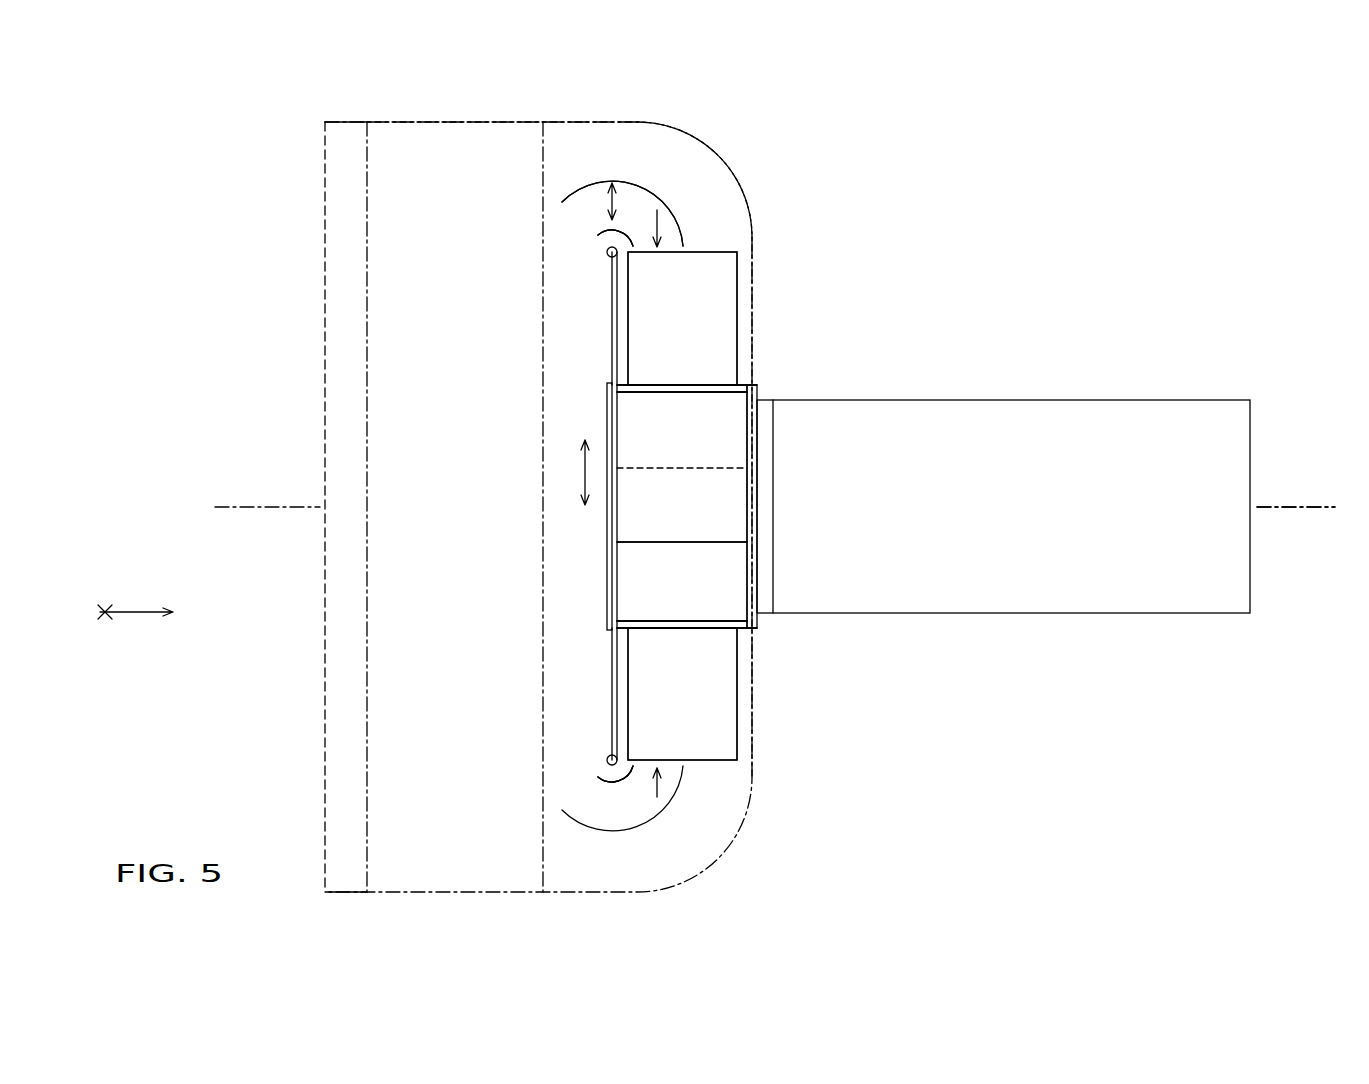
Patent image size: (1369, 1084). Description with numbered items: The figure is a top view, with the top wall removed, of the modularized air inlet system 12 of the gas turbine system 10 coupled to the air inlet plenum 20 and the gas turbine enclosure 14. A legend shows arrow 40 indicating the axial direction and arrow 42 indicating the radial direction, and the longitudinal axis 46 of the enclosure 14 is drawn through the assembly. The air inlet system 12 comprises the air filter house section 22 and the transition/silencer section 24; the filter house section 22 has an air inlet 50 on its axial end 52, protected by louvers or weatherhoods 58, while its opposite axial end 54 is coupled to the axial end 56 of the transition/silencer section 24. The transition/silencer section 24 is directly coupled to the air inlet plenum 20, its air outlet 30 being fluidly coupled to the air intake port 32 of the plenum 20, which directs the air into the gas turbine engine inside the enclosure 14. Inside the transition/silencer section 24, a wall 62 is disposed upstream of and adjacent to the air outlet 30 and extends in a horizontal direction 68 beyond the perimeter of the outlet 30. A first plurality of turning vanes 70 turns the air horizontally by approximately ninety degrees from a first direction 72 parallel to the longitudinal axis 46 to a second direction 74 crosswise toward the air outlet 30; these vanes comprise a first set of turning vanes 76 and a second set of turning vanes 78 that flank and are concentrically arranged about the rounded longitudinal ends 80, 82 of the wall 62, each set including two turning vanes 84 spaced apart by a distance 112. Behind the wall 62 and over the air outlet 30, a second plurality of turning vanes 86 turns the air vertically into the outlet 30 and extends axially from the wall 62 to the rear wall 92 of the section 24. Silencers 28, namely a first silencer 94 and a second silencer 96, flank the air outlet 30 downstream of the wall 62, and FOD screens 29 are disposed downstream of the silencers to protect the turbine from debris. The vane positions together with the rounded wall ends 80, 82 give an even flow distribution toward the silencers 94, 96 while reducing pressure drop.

The gas turbine system 10 is at (873, 137).
The modularized air inlet system 12 is at (674, 110).
The gas turbine enclosure 14 is at (1092, 400).
The air inlet plenum 20 is at (773, 445).
The air filter house section 22 is at (455, 122).
The transition/silencer section 24 is at (583, 122).
The silencers 28 is at (737, 320).
The FOD screens 29 is at (749, 383).
The air outlet 30 is at (687, 487).
The air intake port 32 is at (743, 527).
The axial axis 40 is at (133, 615).
The radial axis 42 is at (95, 612).
The longitudinal axis 46 is at (1277, 507).
The air inlet 50 is at (338, 180).
The axial end 52 is at (367, 142).
The axial end 54 is at (542, 150).
The axial end 56 is at (545, 130).
The weatherhoods 58 is at (325, 225).
The wall 62 is at (615, 358).
The horizontal direction 68 is at (582, 473).
The first plurality of turning vanes 70 is at (692, 219).
The first direction 72 is at (577, 229).
The second direction 74 is at (684, 226).
The first set of turning vanes 76 is at (615, 238).
The second set of turning vanes 78 is at (615, 774).
The longitudinal end 80 is at (608, 258).
The longitudinal end 82 is at (608, 755).
The turning vanes 84 is at (678, 223).
The second plurality of turning vanes 86 is at (709, 414).
The rear wall 92 is at (735, 182).
The first silencer 94 is at (682, 318).
The second silencer 96 is at (682, 694).
The distance 112 is at (607, 198).